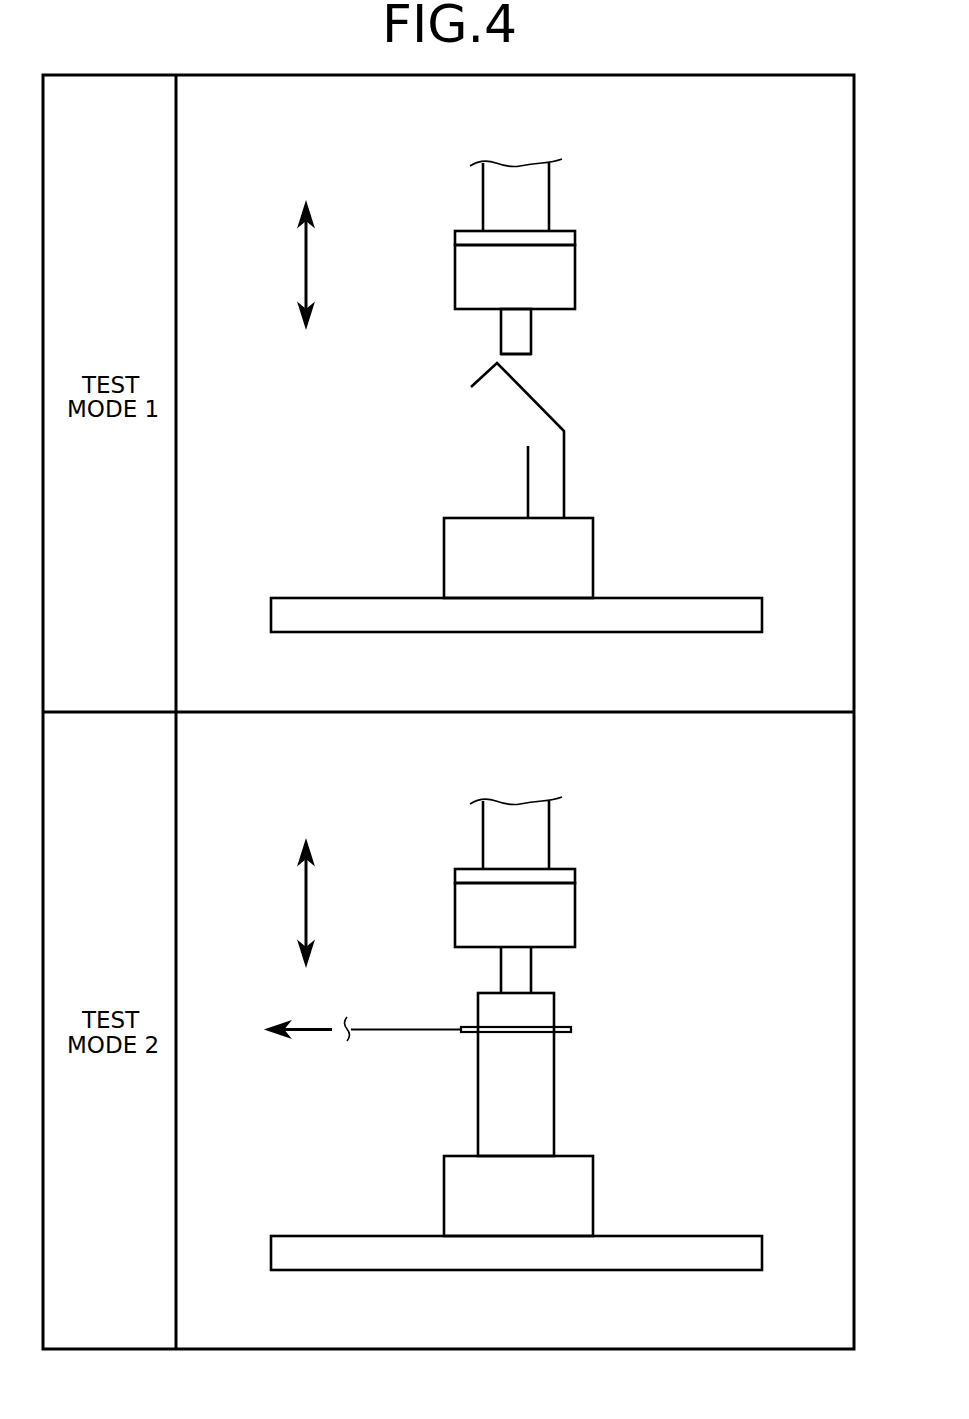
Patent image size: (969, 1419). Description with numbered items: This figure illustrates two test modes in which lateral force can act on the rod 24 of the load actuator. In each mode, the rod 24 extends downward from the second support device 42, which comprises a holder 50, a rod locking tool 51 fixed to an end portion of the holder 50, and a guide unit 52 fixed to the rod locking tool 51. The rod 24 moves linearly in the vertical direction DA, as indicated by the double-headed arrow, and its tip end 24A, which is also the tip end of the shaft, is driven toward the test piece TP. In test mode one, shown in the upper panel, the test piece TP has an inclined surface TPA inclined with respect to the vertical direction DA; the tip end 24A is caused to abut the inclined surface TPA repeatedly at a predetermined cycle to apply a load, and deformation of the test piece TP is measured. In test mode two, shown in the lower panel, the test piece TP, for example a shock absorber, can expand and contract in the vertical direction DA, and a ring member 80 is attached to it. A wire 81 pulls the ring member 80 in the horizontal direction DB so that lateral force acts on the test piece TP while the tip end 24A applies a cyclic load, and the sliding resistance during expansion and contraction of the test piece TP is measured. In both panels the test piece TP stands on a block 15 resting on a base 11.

The base 11 is at (300, 608).
The holding block 15 is at (593, 550).
The rod 24 is at (501, 326).
The tip end 24A is at (514, 355).
The second support device 42 is at (536, 566).
The holder 50 is at (489, 196).
The rod locking tool 51 is at (455, 238).
The guide unit 52 is at (455, 275).
The ring member 80 is at (468, 1035).
The wire 81 is at (388, 1035).
The vertical direction DA is at (302, 267).
The horizontal direction DB is at (305, 1035).
The test piece TP is at (562, 759).
The inclined surface TPA is at (545, 410).